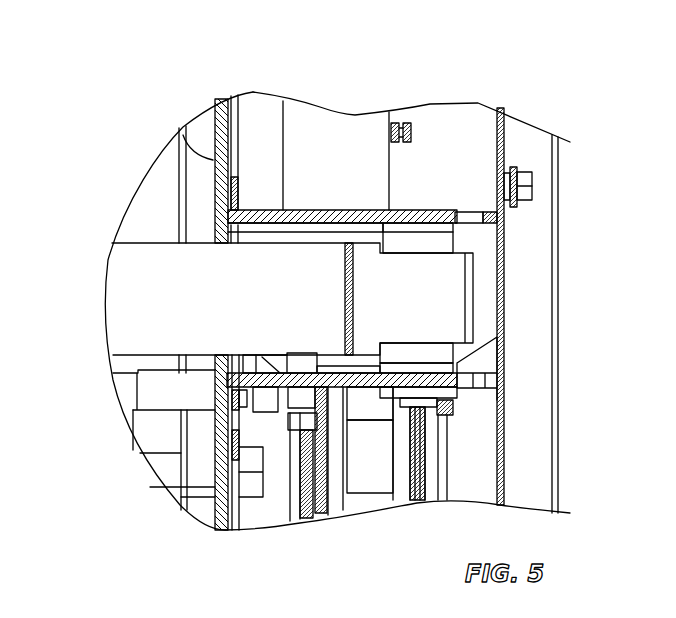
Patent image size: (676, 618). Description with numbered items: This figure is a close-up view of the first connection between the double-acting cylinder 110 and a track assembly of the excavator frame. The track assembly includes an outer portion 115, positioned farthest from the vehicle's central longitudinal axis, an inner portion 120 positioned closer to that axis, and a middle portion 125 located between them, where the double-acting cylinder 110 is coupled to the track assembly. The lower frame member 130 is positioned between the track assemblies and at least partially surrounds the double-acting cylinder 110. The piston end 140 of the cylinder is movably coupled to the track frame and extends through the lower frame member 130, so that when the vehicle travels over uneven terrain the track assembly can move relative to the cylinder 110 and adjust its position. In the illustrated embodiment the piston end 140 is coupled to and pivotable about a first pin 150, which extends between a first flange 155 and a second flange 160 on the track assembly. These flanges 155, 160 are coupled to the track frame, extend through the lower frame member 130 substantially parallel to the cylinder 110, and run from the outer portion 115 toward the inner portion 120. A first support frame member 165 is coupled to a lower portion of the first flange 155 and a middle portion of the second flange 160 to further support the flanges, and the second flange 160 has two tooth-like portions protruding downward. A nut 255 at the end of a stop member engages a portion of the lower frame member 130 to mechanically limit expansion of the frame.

The double-acting cylinder 110 is at (130, 300).
The outer portion 115 is at (558, 192).
The inner portion 120 is at (177, 197).
The middle portion 125 is at (400, 103).
The lower frame member 130 is at (212, 159).
The piston end 140 is at (445, 137).
The first pin 150 is at (443, 242).
The first flange 155 is at (415, 209).
The second flange 160 is at (465, 377).
The first support frame member 165 is at (488, 292).
The nut 255 is at (253, 488).